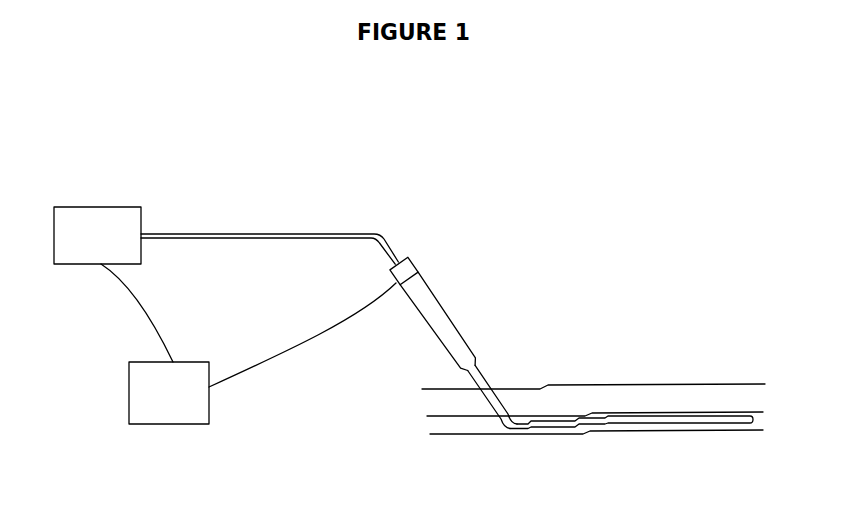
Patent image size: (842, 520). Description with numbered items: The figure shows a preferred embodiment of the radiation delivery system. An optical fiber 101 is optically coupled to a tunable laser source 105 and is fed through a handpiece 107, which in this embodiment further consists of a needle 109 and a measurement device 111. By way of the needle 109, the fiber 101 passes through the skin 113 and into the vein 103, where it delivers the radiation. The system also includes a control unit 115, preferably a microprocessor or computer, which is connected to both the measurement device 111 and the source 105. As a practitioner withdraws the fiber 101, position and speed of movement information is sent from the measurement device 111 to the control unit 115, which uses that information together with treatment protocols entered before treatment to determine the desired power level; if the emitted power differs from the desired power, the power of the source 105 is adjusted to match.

The optical fiber 101 is at (569, 429).
The vein 103 is at (640, 433).
The tunable laser source 105 is at (97, 235).
The handpiece 107 is at (451, 321).
The needle 109 is at (473, 378).
The measurement device 111 is at (408, 264).
The skin 113 is at (578, 384).
The control unit 115 is at (169, 393).